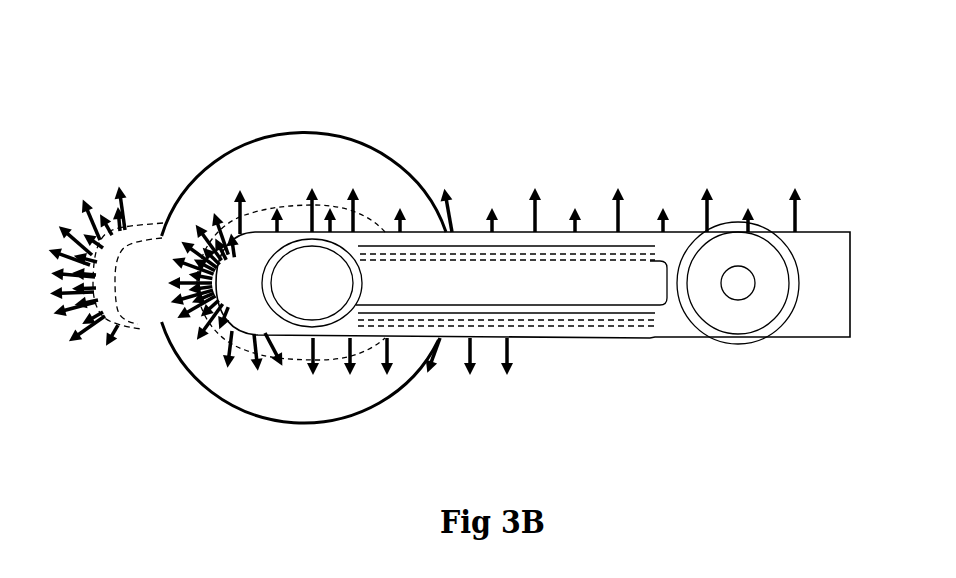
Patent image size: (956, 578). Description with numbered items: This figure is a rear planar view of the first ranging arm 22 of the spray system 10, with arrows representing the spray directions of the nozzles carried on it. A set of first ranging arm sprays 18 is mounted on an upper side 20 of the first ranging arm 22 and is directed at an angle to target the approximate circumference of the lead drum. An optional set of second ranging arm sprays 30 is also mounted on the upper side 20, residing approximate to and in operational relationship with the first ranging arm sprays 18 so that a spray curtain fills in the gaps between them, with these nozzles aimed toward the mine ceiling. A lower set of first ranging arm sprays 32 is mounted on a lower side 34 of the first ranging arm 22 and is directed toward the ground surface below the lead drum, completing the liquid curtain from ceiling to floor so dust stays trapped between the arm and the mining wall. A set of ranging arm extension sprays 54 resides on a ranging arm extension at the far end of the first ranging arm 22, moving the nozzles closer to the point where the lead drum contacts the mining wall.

The spray system 10 is at (448, 108).
The set of first ranging arm sprays 18 is at (491, 197).
The upper side 20 is at (638, 222).
The first ranging arm 22 is at (636, 290).
The set of second ranging arm sprays 30 is at (539, 184).
The lower set of first ranging arm sprays 32 is at (509, 380).
The lower side 34 is at (588, 340).
The set of ranging arm extension sprays 54 is at (95, 187).